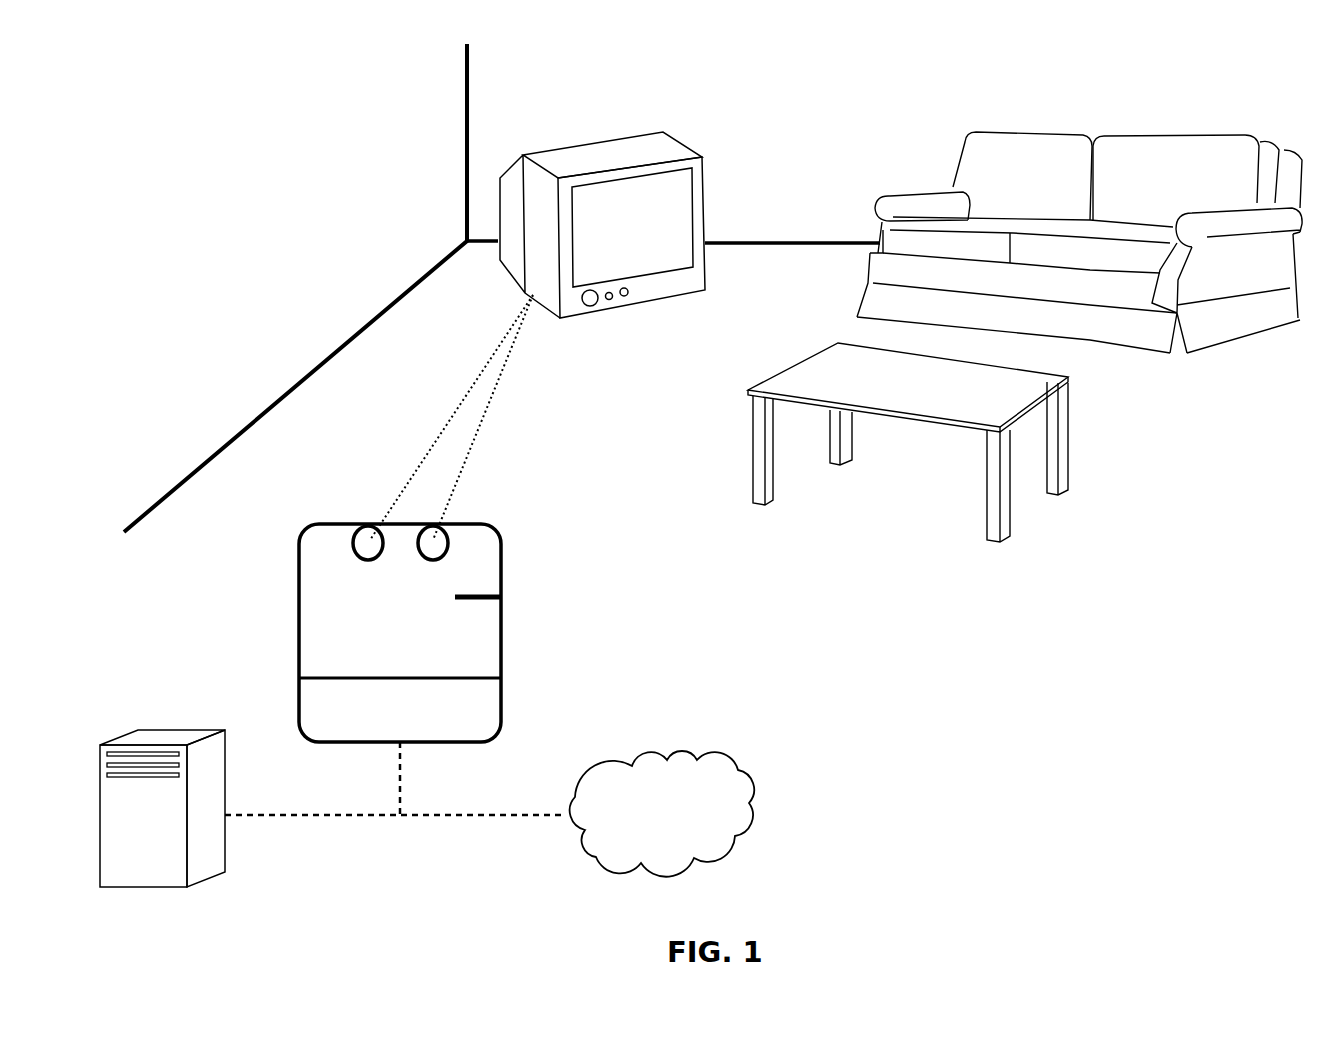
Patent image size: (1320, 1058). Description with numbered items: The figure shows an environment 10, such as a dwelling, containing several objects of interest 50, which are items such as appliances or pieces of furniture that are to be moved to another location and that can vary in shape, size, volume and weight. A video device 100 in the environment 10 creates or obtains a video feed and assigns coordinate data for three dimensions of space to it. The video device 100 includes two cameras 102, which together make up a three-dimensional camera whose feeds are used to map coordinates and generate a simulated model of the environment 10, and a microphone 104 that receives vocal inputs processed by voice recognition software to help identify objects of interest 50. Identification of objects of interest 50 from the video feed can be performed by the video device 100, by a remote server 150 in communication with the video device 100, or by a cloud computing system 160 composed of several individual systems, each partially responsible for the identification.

The environment 10 is at (1134, 657).
The object of interest 50 is at (675, 138).
The video device 100 is at (502, 642).
The cameras 102 is at (352, 542).
The microphone 104 is at (501, 597).
The remote server 150 is at (227, 853).
The cloud computing system 160 is at (758, 810).